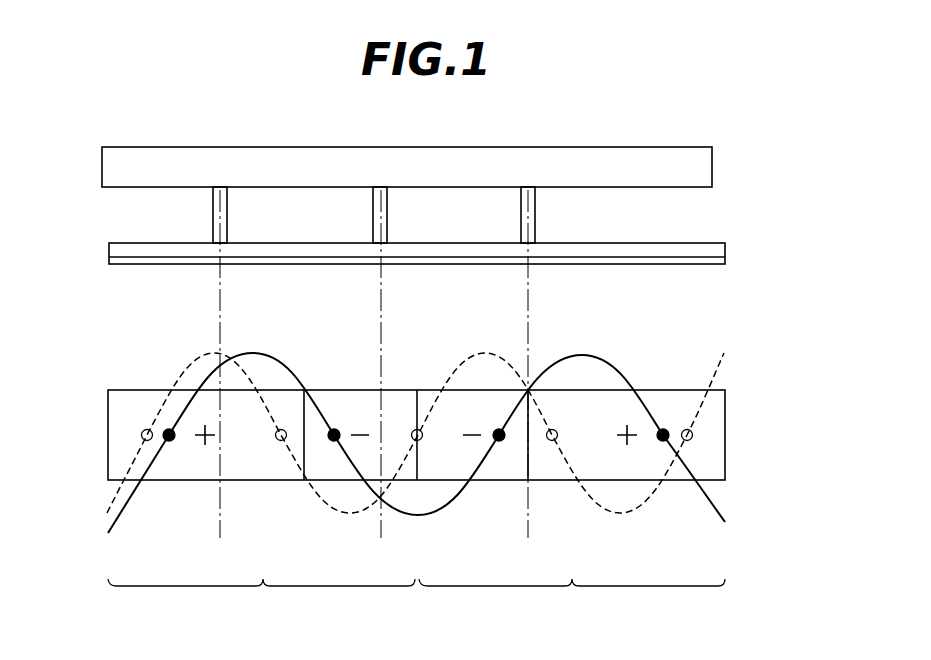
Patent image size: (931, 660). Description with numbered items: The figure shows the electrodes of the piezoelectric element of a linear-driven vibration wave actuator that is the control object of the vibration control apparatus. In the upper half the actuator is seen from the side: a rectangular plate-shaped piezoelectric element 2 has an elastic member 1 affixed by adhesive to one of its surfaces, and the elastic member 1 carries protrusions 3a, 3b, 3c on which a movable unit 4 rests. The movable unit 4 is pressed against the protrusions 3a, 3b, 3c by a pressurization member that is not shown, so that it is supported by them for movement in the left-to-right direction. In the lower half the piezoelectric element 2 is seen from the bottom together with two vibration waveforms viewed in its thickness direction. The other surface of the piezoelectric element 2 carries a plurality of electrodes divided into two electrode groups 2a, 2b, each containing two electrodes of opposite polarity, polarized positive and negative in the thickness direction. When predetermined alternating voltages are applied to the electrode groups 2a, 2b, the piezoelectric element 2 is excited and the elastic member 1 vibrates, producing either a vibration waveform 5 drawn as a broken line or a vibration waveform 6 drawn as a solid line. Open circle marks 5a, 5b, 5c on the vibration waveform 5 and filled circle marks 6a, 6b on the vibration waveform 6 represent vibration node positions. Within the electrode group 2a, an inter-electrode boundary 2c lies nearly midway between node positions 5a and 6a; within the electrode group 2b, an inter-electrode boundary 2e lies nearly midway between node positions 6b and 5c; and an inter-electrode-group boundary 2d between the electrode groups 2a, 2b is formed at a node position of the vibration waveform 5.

The elastic member 1 is at (712, 243).
The piezoelectric element 2 is at (712, 265).
The electrode group 2a is at (261, 599).
The electrode group 2b is at (572, 599).
The inter-electrode boundary 2c is at (306, 413).
The inter-electrode-group boundary 2d is at (418, 404).
The inter-electrode boundary 2e is at (528, 403).
The protrusion 3a is at (226, 201).
The protrusion 3b is at (388, 201).
The protrusion 3c is at (536, 201).
The movable unit 4 is at (685, 160).
The vibration waveform 5 is at (193, 372).
The vibration node position 5a is at (281, 443).
The vibration node position 5b is at (421, 443).
The vibration node position 5c is at (553, 443).
The vibration waveform 6 is at (712, 500).
The vibration node position 6a is at (334, 443).
The vibration node position 6b is at (500, 443).